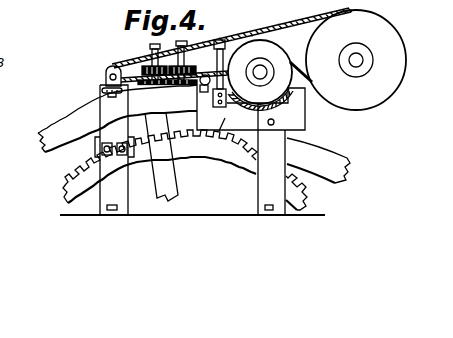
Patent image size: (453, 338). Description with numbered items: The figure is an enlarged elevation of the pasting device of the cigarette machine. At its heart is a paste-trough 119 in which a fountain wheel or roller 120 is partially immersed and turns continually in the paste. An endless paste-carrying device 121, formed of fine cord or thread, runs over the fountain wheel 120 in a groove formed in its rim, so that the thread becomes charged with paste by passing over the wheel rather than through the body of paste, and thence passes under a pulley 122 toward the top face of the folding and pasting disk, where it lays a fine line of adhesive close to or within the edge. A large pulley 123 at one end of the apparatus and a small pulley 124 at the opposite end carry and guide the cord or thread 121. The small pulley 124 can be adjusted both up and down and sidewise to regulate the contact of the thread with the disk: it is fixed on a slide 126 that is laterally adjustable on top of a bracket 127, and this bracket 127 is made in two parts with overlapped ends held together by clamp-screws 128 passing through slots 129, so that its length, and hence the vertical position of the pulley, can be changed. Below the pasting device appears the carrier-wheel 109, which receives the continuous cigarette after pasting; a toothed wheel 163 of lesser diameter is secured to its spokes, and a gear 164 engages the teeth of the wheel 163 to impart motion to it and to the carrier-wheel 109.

The carrier-wheel 109 is at (43, 151).
The paste-trough 119 is at (300, 114).
The fountain wheel 120 is at (260, 72).
The endless paste-carrying device 121 is at (250, 32).
The pulley 122 is at (205, 75).
The large pulley 123 is at (356, 60).
The small pulley 124 is at (111, 71).
The slide 126 is at (103, 83).
The bracket 127 is at (114, 150).
The clamp-screws 128 is at (121, 156).
The slots 129 is at (114, 139).
The toothed wheel 163 is at (210, 156).
The gear 164 is at (237, 143).